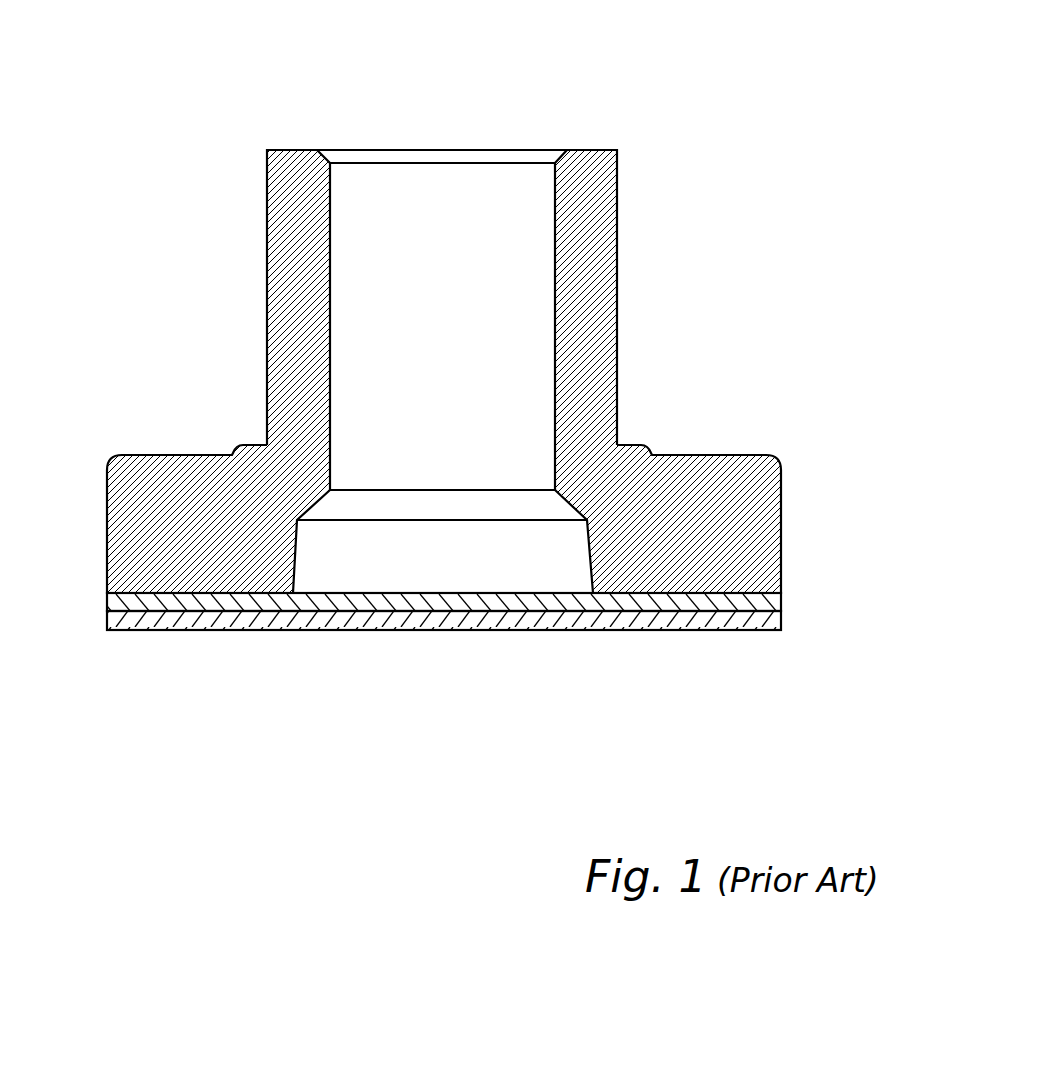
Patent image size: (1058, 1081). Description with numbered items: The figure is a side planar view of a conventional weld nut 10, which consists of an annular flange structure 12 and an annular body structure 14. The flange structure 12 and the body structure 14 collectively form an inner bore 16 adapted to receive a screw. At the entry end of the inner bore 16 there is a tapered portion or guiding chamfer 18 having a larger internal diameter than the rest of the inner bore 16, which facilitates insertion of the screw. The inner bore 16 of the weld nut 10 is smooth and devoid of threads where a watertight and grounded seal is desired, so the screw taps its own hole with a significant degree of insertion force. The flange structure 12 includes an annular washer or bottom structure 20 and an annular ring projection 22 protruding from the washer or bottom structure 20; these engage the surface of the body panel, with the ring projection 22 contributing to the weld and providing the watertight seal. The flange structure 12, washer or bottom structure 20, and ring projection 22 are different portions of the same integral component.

The weld nut 10 is at (476, 345).
The flange structure 12 is at (782, 515).
The body structure 14 is at (618, 292).
The inner bore 16 is at (373, 380).
The tapered portion 18 is at (315, 557).
The washer or bottom structure 20 is at (782, 598).
The ring projection 22 is at (782, 620).